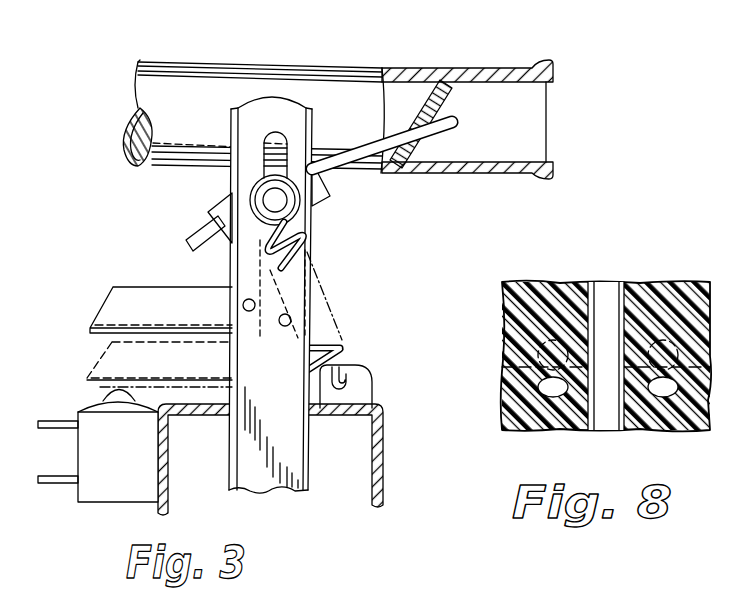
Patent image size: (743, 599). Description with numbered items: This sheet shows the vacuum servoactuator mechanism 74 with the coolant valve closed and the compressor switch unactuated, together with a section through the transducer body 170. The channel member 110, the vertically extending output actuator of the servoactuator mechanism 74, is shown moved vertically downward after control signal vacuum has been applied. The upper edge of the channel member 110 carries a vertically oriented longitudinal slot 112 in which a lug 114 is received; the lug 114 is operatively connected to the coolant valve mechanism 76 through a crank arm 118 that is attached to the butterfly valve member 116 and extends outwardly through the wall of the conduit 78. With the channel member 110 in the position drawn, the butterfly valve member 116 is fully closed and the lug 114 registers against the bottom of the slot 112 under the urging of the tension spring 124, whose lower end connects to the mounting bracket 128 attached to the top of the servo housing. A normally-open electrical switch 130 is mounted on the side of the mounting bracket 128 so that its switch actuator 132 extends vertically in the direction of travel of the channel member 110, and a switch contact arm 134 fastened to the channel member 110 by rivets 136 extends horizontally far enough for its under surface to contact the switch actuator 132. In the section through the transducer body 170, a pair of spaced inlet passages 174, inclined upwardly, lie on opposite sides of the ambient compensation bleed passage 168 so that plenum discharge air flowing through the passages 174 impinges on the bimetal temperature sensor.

In FIG. 3, the vacuum servoactuator mechanism 74 is at (380, 387).
In FIG. 3, the coolant valve mechanism 76 is at (407, 67).
In FIG. 3, the conduit 78 is at (247, 65).
In FIG. 3, the channel member 110 is at (258, 396).
In FIG. 3, the longitudinal slot 112 is at (276, 143).
In FIG. 3, the lug 114 is at (280, 227).
In FIG. 3, the butterfly valve member 116 is at (433, 78).
In FIG. 3, the crank arm 118 is at (349, 172).
In FIG. 3, the tension spring 124 is at (312, 243).
In FIG. 3, the mounting bracket 128 is at (384, 425).
In FIG. 3, the normally-open electrical switch 130 is at (76, 500).
In FIG. 3, the switch actuator 132 is at (95, 397).
In FIG. 3, the switch contact arm 134 is at (108, 289).
In FIG. 3, the rivets 136 is at (283, 314).
In FIG. 8, the bleed passage 168 is at (620, 305).
In FIG. 8, the transducer body 170 is at (532, 284).
In FIG. 8, the inlet passages 174 is at (663, 396).